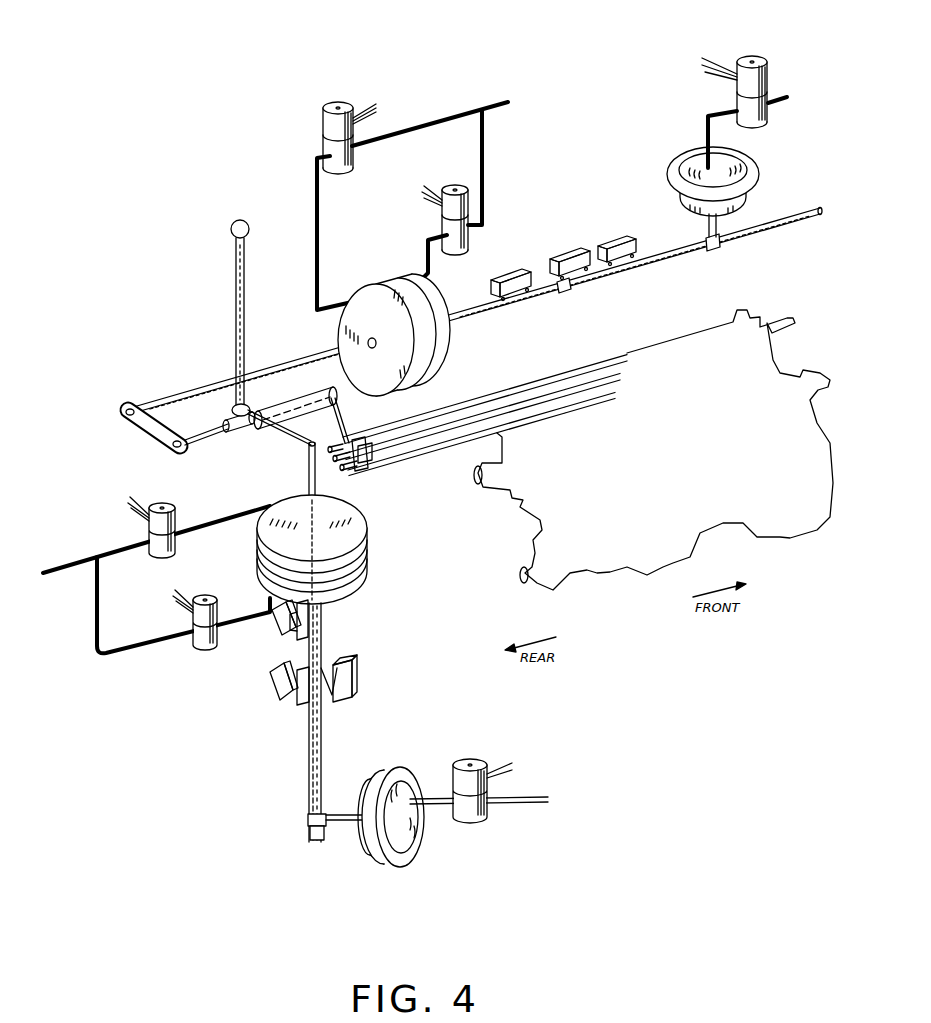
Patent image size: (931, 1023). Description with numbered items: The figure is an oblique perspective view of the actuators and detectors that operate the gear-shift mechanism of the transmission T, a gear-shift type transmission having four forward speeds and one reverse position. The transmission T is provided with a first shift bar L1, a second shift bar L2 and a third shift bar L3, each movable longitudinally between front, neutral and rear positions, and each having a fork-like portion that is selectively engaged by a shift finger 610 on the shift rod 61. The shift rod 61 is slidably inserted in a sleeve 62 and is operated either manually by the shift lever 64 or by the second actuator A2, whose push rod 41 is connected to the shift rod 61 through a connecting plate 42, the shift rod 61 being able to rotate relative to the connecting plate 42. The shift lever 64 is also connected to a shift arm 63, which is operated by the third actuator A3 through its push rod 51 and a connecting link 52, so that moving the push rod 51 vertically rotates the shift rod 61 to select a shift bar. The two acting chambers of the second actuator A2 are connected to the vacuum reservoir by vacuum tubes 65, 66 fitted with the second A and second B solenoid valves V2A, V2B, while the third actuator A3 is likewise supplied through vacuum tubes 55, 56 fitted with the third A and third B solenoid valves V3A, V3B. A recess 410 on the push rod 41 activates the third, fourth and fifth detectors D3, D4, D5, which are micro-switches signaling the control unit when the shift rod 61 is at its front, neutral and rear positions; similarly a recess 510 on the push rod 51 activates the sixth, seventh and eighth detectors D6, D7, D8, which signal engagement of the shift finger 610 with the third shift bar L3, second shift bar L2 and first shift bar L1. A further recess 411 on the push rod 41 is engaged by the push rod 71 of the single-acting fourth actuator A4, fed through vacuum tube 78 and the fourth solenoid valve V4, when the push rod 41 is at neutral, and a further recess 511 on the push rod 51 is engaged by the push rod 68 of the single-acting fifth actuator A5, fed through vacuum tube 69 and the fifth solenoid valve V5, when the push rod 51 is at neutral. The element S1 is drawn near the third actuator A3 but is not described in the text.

The push rod 41 is at (200, 390).
The recess 410 is at (563, 292).
The recess 411 is at (716, 248).
The push rod 71 is at (733, 222).
The connecting plate 42 is at (150, 430).
The shift rod 61 is at (210, 440).
The sleeve 62 is at (240, 431).
The shift arm 63 is at (278, 437).
The shift lever 64 is at (246, 276).
The connecting link 52 is at (300, 440).
The push rod 51 is at (355, 498).
The shift finger 610 is at (332, 403).
The first shift bar L1 is at (418, 455).
The second shift bar L2 is at (430, 430).
The third shift bar L3 is at (487, 394).
The vacuum tube 65 is at (316, 186).
The vacuum tube 66 is at (430, 268).
The second actuator A2 is at (367, 272).
The second A solenoid valve V2A is at (340, 102).
The second B solenoid valve V2B is at (456, 185).
The third detector D3 is at (510, 272).
The fourth detector D4 is at (560, 252).
The fifth detector D5 is at (612, 240).
The fourth actuator A4 is at (767, 159).
The vacuum tube 78 is at (707, 118).
The fourth solenoid valve V4 is at (758, 57).
The transmission T is at (653, 450).
The vacuum tube 55 is at (206, 527).
The vacuum tube 56 is at (243, 627).
The third A solenoid valve V3A is at (158, 505).
The third B solenoid valve V3B is at (203, 650).
The third actuator A3 is at (382, 550).
The shaft S1 is at (323, 628).
The recess 510 is at (312, 666).
The sixth detector D6 is at (270, 636).
The seventh detector D7 is at (360, 676).
The eighth detector D8 is at (281, 706).
The recess 511 is at (310, 822).
The push rod 68 is at (342, 813).
The fifth actuator A5 is at (384, 870).
The vacuum tube 69 is at (445, 806).
The fifth solenoid valve V5 is at (480, 757).